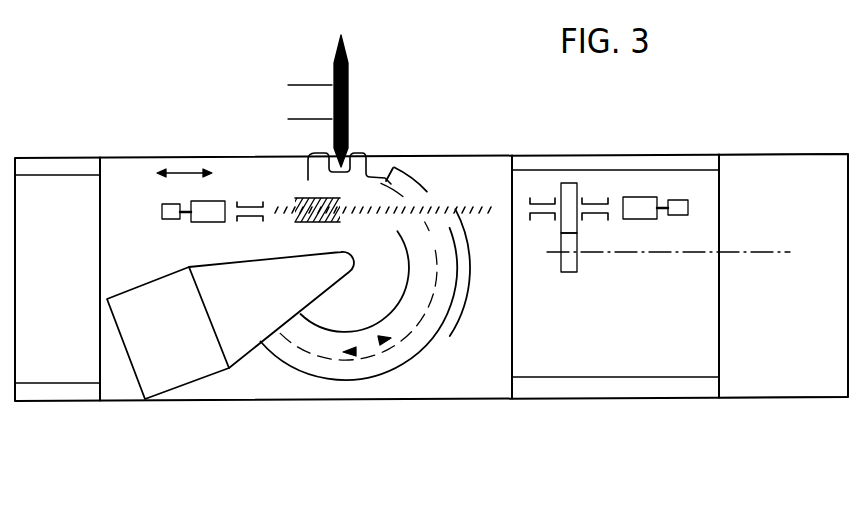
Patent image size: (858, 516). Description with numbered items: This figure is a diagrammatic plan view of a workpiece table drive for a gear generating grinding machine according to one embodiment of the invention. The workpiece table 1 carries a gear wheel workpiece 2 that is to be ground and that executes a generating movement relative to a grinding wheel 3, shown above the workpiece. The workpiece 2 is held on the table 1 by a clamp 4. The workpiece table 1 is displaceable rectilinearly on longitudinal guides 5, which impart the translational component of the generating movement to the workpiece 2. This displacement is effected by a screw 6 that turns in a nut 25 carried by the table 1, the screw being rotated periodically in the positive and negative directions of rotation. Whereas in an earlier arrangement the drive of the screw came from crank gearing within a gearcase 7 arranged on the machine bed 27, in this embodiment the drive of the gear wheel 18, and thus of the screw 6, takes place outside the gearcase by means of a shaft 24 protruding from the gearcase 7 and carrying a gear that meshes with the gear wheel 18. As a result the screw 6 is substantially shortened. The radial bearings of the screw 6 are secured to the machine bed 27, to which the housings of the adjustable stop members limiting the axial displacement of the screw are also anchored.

The workpiece table 1 is at (308, 358).
The gear wheel workpiece 2 is at (363, 160).
The grinding wheel 3 is at (348, 62).
The clamp 4 is at (174, 367).
The longitudinal guides 5 is at (530, 163).
The screw 6 is at (450, 336).
The gearcase 7 is at (785, 358).
The gear wheel 18 is at (572, 193).
The shaft 24 is at (630, 252).
The nut 25 is at (308, 207).
The machine bed 27 is at (68, 363).